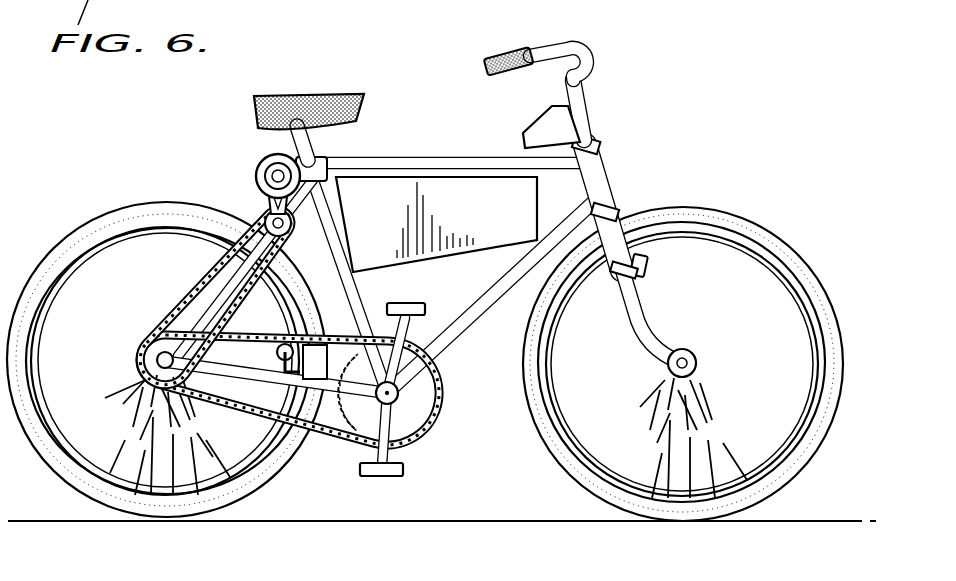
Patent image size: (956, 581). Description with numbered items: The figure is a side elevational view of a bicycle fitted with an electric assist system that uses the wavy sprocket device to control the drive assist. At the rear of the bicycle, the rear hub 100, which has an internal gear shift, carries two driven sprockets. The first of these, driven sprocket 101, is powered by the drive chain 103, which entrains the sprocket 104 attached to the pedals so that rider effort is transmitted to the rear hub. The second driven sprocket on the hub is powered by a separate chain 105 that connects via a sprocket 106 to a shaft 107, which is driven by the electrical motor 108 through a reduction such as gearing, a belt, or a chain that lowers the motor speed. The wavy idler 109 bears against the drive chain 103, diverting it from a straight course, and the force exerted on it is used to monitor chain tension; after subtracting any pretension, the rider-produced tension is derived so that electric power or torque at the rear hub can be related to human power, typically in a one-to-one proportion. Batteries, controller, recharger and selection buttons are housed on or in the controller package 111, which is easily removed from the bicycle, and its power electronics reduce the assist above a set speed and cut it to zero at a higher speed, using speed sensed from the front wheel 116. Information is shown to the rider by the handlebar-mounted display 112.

The rear hub 100 is at (128, 342).
The driven sprocket 101 is at (140, 358).
The drive chain 103 is at (318, 452).
The sprocket 104 is at (410, 415).
The chain 105 is at (198, 290).
The sprocket 106 is at (292, 222).
The shaft 107 is at (256, 175).
The electrical motor 108 is at (263, 157).
The wavy idler 109 is at (270, 352).
The controller package 111 is at (436, 224).
The handlebar-mounted display 112 is at (535, 134).
The front wheel 116 is at (787, 253).